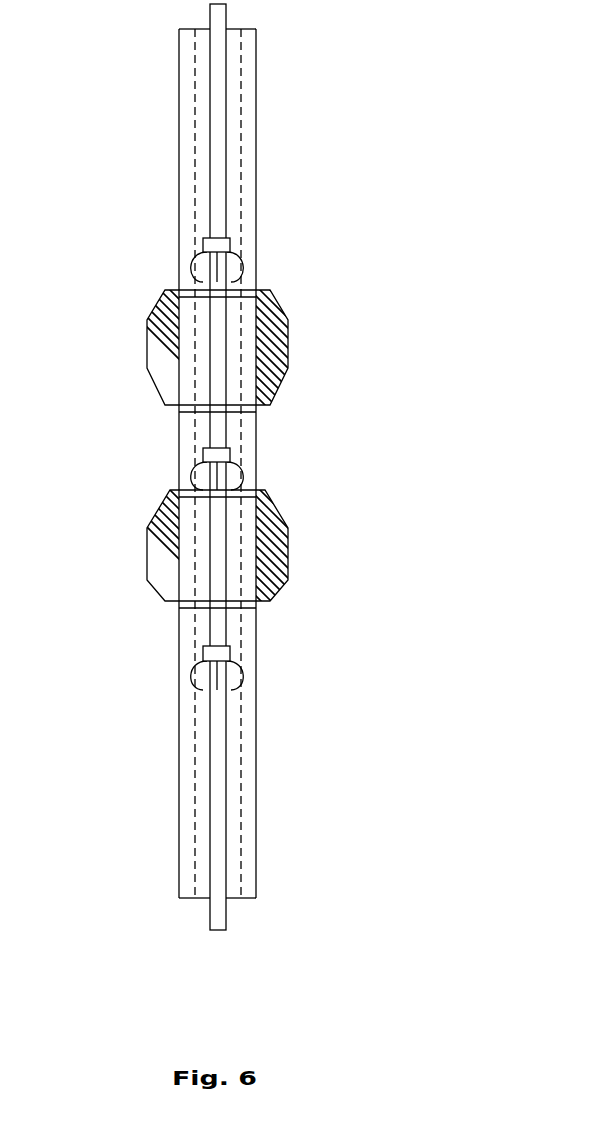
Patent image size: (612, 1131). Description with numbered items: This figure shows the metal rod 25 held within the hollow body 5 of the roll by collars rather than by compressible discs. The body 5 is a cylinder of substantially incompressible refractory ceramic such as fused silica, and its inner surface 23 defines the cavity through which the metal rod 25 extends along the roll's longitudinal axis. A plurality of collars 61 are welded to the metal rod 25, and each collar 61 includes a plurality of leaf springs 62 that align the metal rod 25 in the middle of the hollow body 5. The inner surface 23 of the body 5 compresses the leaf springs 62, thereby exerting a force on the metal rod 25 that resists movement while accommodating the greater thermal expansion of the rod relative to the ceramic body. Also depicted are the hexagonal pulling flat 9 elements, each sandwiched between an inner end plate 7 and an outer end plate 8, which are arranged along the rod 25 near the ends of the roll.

The body 5 is at (163, 119).
The metal rod 25 is at (218, 75).
The inner surface 23 is at (195, 765).
The collar 61 is at (206, 238).
The leaf spring 62 is at (199, 678).
The pulling flat 9 is at (287, 346).
The outer end plate 8 is at (253, 285).
The inner end plate 7 is at (257, 402).